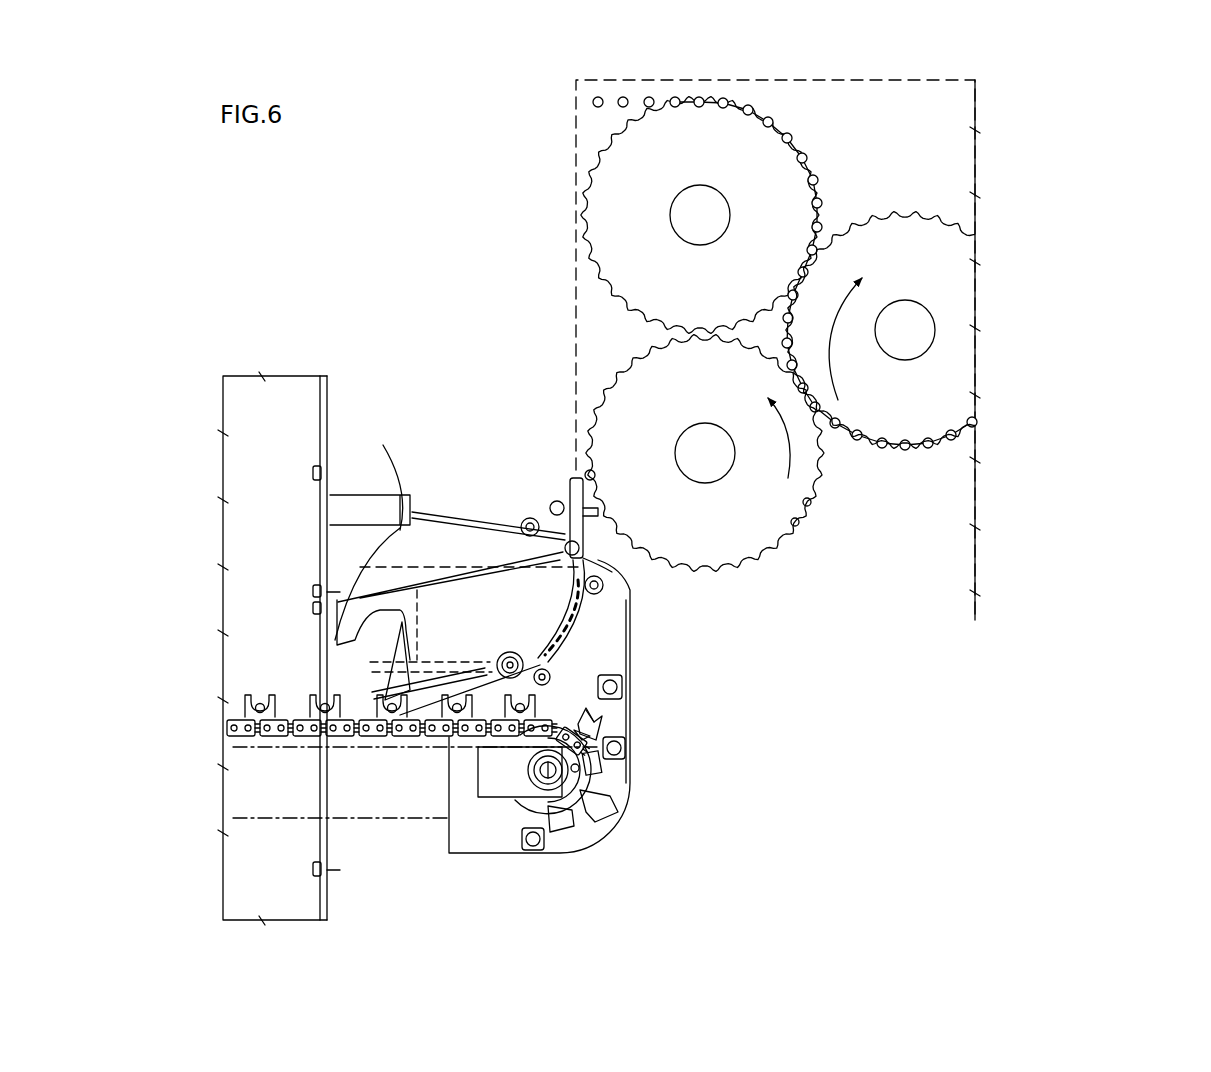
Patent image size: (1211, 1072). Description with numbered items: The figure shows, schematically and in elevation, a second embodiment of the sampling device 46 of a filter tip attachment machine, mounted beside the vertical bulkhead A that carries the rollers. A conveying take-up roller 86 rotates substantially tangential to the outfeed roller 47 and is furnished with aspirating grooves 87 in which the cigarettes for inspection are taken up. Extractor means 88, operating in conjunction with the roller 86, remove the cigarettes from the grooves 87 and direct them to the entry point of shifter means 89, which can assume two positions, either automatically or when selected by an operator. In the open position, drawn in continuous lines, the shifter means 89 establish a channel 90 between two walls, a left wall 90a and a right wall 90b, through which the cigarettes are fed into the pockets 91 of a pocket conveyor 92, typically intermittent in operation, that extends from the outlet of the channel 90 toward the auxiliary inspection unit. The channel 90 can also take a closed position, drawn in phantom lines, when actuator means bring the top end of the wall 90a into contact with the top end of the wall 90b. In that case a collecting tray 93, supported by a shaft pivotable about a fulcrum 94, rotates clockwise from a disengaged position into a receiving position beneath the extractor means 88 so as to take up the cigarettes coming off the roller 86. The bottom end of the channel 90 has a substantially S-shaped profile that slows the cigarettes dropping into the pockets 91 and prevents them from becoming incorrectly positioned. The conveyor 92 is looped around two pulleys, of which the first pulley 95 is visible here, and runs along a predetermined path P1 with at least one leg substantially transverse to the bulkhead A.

The vertical bulkhead A is at (855, 103).
The sampling device 46 is at (654, 633).
The outfeed roller 47 is at (936, 412).
The conveying take-up roller 86 is at (636, 388).
The aspirating grooves 87 is at (811, 506).
The extractor means 88 is at (574, 475).
The shifter means 89 is at (592, 600).
The channel 90 is at (574, 626).
The left wall 90a is at (572, 545).
The right wall 90b is at (590, 563).
The pockets 91 is at (604, 730).
The pocket conveyor 92 is at (580, 716).
The tray 93 is at (438, 563).
The fulcrum 94 is at (510, 652).
The pulley 95 is at (524, 806).
The path P1 is at (258, 698).